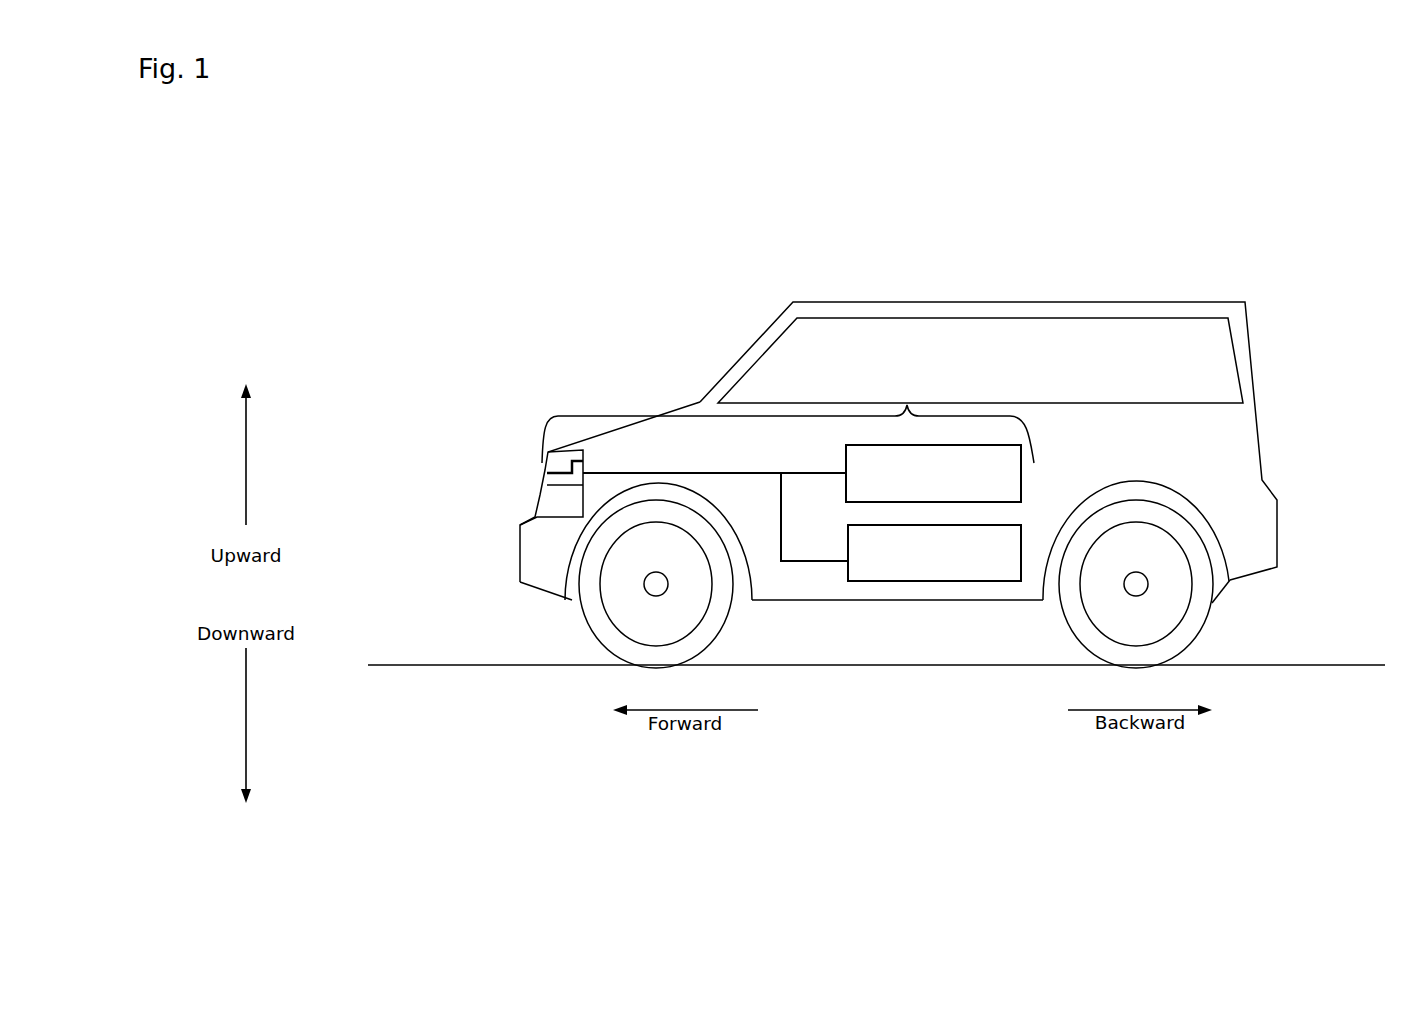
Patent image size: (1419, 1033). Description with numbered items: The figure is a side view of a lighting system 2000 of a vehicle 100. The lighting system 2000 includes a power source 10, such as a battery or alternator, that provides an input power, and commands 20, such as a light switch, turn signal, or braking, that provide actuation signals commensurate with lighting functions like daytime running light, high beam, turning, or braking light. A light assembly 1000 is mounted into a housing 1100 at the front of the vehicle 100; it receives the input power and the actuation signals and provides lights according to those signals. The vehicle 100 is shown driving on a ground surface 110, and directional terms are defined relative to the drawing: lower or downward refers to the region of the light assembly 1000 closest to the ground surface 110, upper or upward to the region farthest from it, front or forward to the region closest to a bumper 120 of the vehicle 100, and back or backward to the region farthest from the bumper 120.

The vehicle 100 is at (980, 303).
The light assembly 1000 is at (522, 411).
The lighting system 2000 is at (907, 405).
The housing 1100 is at (585, 466).
The bumper 120 is at (522, 526).
The ground surface 110 is at (432, 665).
The commands 20 is at (802, 503).
The power source 10 is at (934, 553).